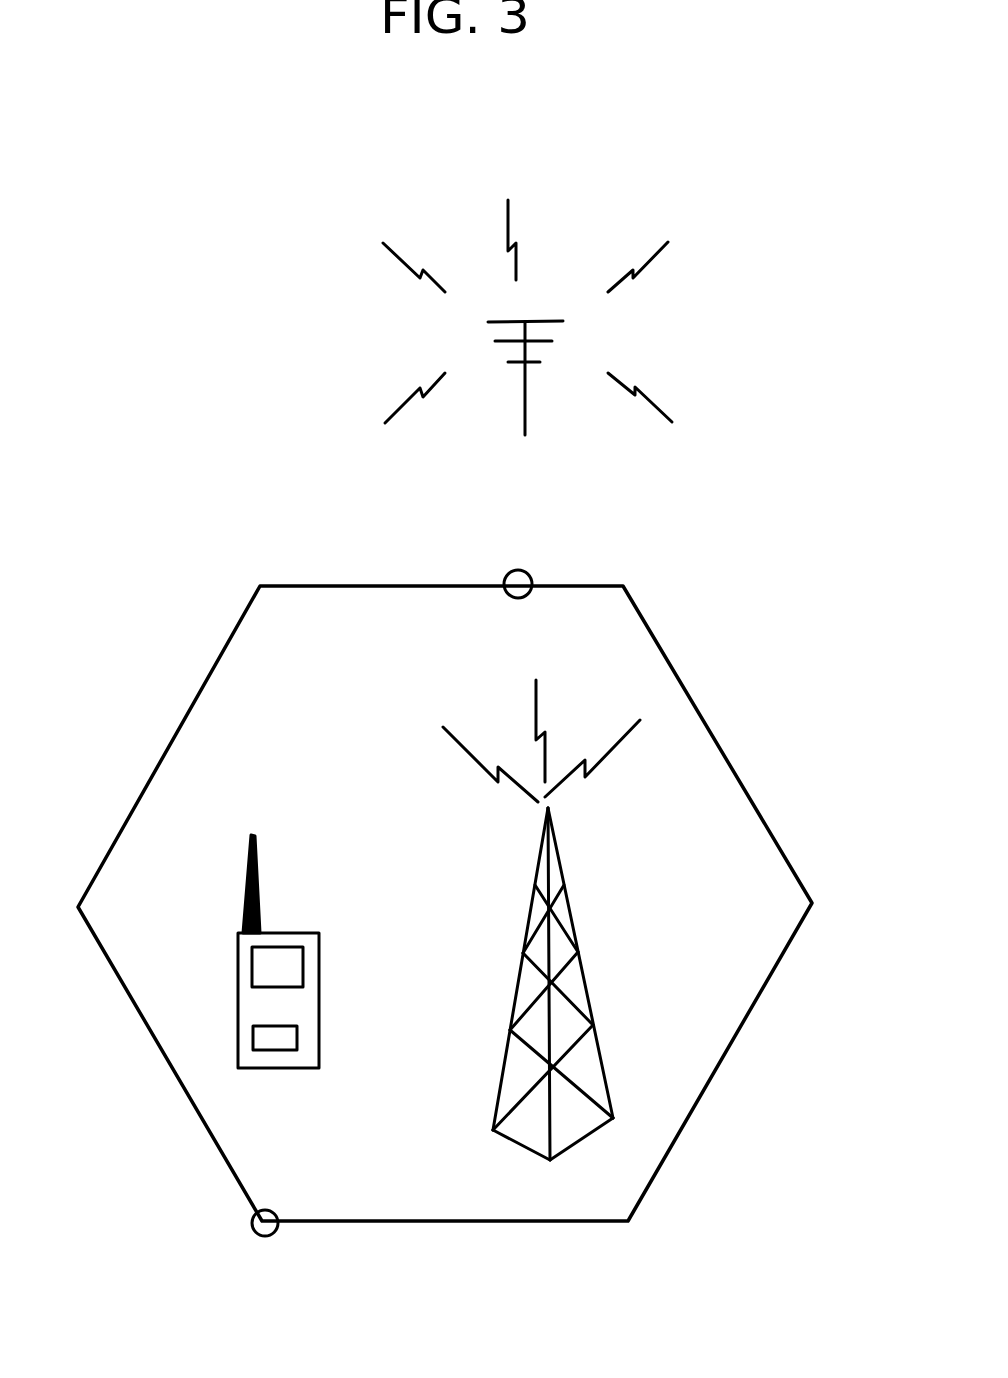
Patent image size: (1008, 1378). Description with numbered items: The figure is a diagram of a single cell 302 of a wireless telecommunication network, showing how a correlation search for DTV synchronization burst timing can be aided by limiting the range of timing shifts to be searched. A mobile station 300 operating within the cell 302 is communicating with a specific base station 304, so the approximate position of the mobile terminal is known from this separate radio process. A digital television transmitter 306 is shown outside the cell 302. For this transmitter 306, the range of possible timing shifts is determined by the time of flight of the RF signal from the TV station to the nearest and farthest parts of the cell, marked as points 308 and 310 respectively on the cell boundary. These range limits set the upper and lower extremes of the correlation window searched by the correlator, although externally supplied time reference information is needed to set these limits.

The mobile station 300 is at (322, 983).
The cell 302 is at (707, 717).
The base station 304 is at (582, 928).
The digital television transmitter 306 is at (527, 393).
The nearest point of the cell 308 is at (505, 575).
The farthest point of the cell 310 is at (252, 1235).